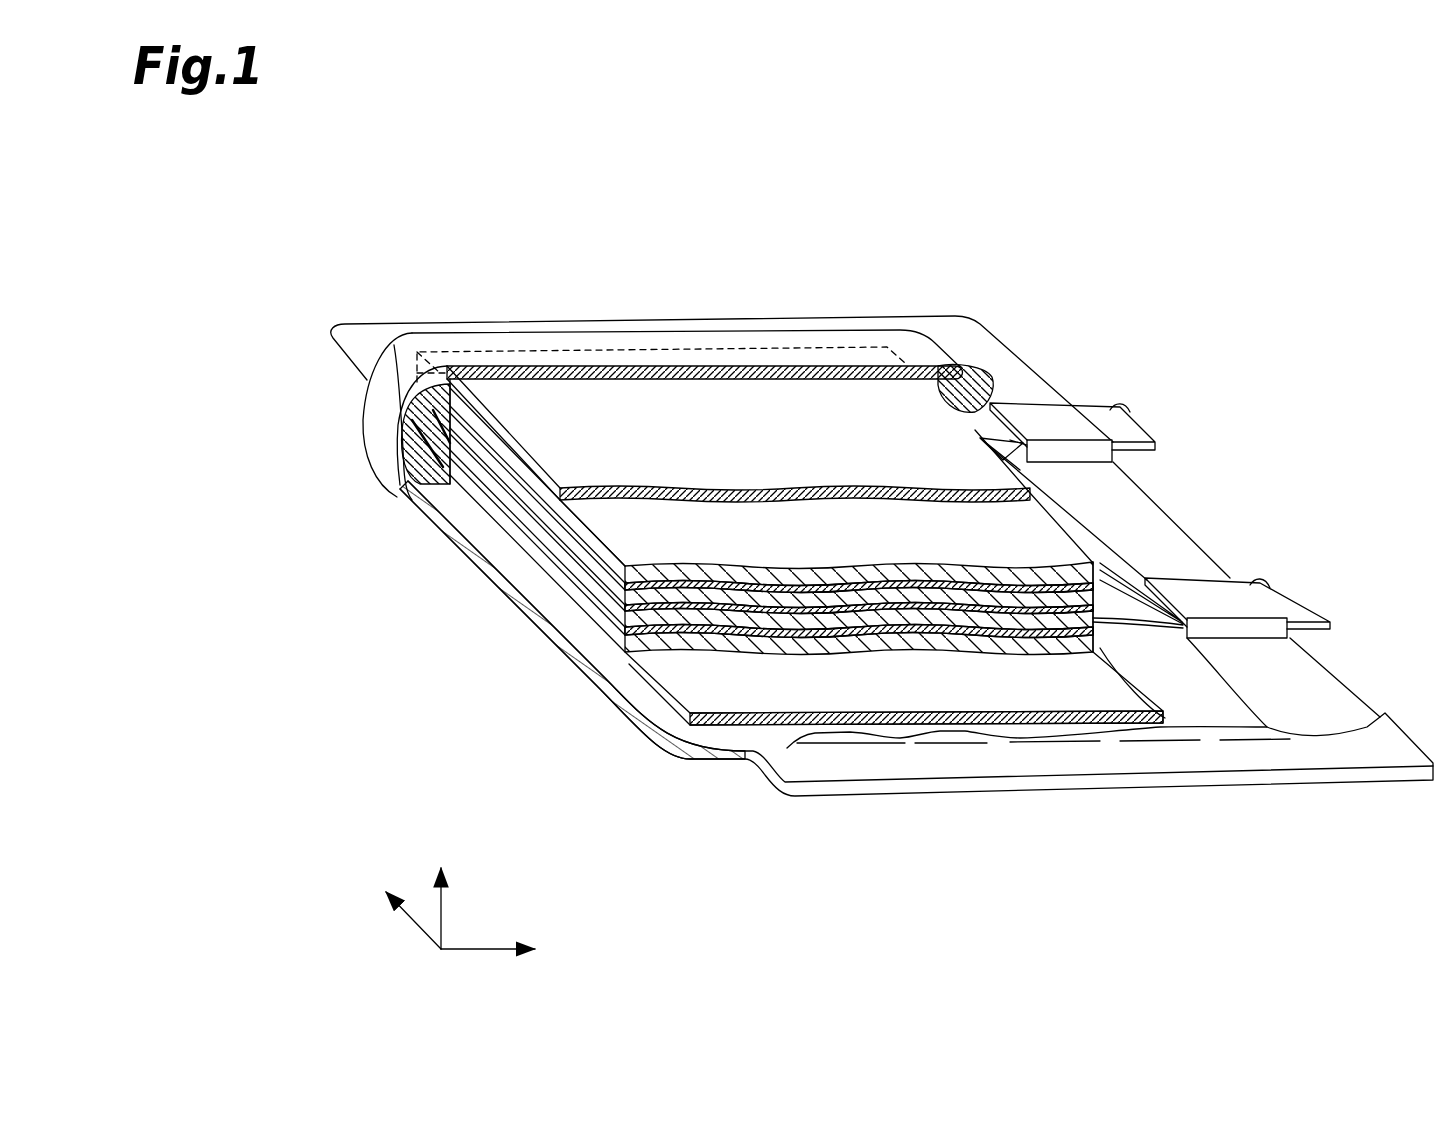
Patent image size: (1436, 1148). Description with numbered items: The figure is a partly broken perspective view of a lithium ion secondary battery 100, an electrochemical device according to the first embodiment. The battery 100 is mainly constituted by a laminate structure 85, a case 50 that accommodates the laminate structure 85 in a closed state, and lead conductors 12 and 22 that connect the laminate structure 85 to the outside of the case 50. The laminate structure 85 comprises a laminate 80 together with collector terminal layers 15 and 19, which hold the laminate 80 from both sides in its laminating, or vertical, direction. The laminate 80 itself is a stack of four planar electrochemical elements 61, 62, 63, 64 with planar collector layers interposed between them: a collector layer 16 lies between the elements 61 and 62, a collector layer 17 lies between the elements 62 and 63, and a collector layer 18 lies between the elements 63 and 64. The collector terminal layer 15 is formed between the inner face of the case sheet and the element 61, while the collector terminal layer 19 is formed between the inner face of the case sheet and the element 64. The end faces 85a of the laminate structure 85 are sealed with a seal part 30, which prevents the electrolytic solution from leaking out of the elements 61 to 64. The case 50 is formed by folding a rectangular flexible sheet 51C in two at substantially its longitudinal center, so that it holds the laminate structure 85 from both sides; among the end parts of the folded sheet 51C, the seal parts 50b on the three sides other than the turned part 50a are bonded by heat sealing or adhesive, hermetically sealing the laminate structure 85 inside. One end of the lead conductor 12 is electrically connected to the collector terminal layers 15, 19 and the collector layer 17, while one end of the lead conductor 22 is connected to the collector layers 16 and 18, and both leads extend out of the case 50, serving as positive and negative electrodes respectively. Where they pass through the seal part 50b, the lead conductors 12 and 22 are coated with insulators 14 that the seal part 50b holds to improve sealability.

The lithium ion secondary battery 100 is at (858, 142).
The case 50 is at (638, 320).
The turned part 50a is at (380, 428).
The seal part 50b is at (755, 328).
The sheet 51C is at (848, 327).
The seal part 30 is at (394, 345).
The laminate structure 85 is at (328, 525).
The end faces 85a is at (478, 447).
The laminate 80 is at (381, 558).
The collector terminal layer 15 is at (518, 480).
The planar element 61 is at (543, 482).
The collector layer 16 is at (548, 505).
The planar element 62 is at (552, 516).
The collector layer 17 is at (555, 534).
The planar element 63 is at (558, 543).
The collector layer 18 is at (561, 562).
The planar element 64 is at (565, 574).
The collector terminal layer 19 is at (607, 636).
The insulator 14 is at (1067, 432).
The lead conductor 12 is at (1122, 428).
The lead conductor 22 is at (1282, 610).